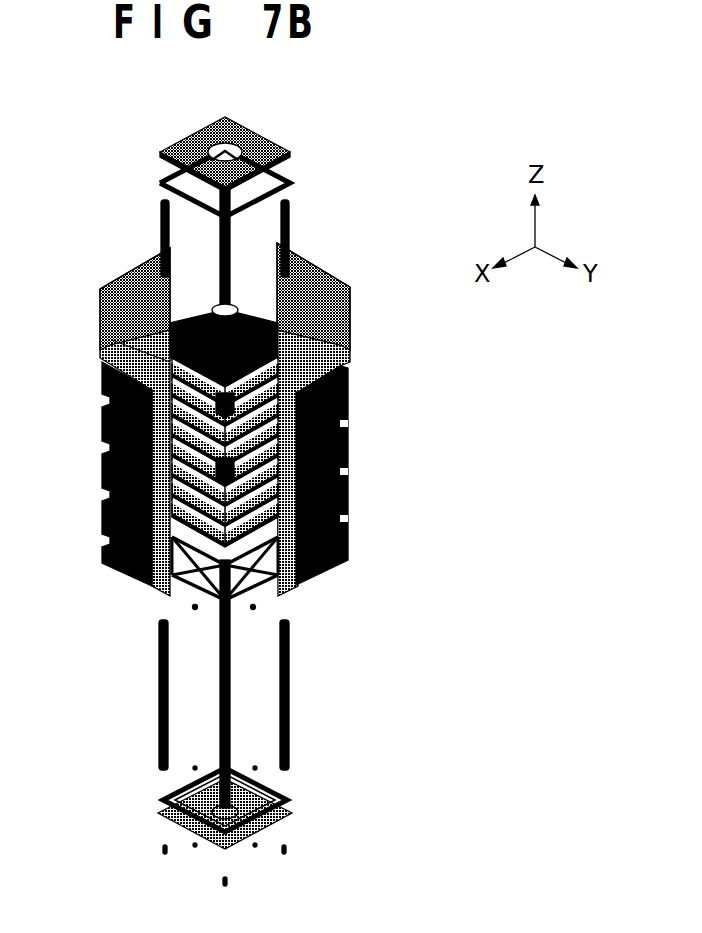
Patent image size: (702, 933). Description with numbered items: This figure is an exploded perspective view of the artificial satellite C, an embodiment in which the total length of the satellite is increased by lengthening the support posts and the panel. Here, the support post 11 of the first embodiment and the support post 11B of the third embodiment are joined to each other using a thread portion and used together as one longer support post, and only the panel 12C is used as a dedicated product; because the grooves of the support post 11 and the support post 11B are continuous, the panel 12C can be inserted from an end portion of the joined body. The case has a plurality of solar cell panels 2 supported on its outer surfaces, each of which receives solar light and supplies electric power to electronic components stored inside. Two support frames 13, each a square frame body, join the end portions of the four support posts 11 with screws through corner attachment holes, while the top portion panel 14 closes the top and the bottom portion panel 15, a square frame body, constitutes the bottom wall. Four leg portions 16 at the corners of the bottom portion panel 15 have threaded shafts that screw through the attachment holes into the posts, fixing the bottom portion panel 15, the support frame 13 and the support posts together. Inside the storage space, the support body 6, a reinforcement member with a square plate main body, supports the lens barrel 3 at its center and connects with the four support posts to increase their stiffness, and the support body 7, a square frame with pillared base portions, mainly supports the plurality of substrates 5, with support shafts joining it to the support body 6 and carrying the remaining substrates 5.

The artificial satellite C is at (388, 224).
The solar cell panel 2 is at (100, 423).
The lens barrel 3 is at (235, 305).
The substrate 5 is at (262, 363).
The support body 6 is at (184, 330).
The support body 7 is at (268, 393).
The support post 11 is at (162, 237).
The support post 11B is at (160, 710).
The panel 12C is at (135, 268).
The support frame 13 is at (163, 183).
The top portion panel 14 is at (162, 153).
The bottom portion panel 15 is at (287, 812).
The leg portion 16 is at (285, 850).